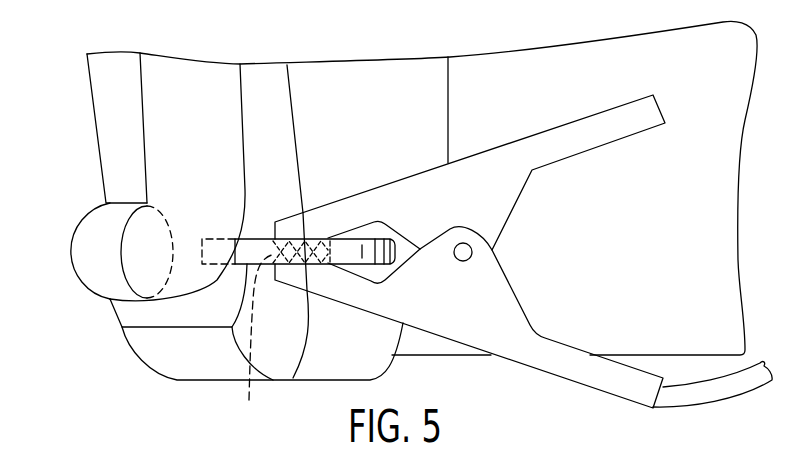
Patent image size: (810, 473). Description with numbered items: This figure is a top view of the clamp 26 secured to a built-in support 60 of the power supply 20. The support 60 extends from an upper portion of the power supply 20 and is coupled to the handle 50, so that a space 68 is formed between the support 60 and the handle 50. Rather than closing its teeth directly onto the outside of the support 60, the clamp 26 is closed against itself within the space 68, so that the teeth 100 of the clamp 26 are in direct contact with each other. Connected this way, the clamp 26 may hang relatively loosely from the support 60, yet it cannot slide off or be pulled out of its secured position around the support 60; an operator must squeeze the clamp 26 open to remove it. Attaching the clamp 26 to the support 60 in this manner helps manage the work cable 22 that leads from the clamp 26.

The power supply 20 is at (77, 78).
The work cable 22 is at (712, 397).
The clamp 26 is at (503, 130).
The handle 50 is at (170, 153).
The support 60 is at (343, 252).
The space 68 is at (325, 266).
The teeth 100 is at (253, 341).